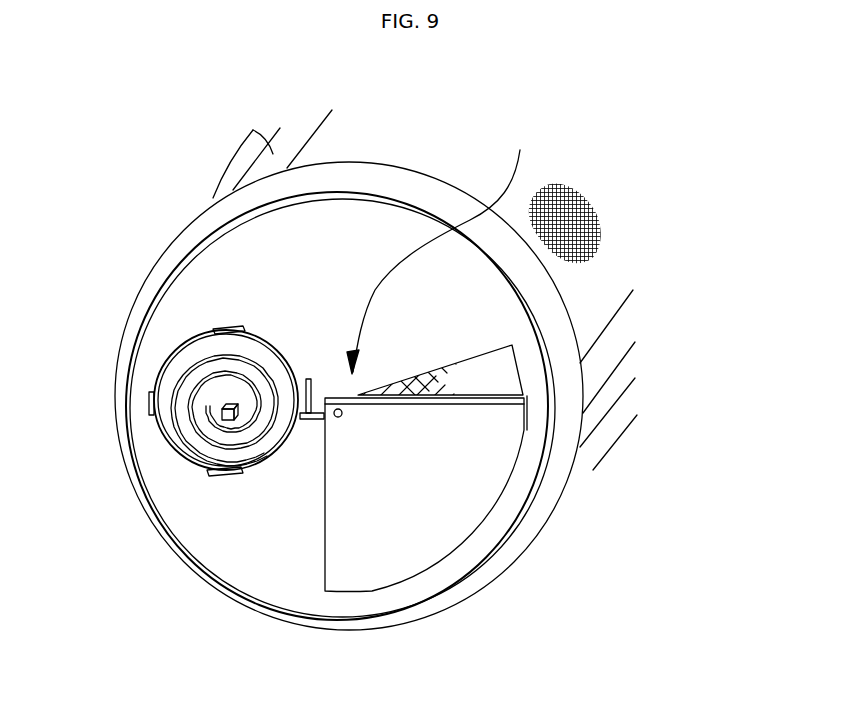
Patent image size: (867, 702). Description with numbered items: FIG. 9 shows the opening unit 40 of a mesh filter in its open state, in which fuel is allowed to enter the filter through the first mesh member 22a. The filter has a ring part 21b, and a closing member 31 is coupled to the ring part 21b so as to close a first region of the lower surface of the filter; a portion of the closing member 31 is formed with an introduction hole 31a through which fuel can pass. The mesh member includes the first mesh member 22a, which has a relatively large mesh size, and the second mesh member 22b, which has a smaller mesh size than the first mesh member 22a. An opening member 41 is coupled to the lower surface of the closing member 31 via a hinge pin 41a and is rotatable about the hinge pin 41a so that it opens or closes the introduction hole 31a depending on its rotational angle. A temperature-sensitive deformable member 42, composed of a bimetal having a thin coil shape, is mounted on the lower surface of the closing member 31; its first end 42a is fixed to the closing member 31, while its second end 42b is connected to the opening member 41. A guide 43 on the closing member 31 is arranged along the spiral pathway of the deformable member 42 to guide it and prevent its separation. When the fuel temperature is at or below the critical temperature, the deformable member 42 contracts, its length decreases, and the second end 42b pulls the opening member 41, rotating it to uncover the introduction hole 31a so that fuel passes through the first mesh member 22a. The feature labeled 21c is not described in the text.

The ring part 21b is at (170, 250).
The inlet pipe 21c is at (253, 130).
The first mesh member 22a is at (487, 390).
The second mesh member 22b is at (590, 237).
The closing member 31 is at (213, 540).
The introduction hole 31a is at (487, 350).
The opening unit 40 is at (440, 255).
The opening member 41 is at (435, 545).
The hinge pin 41a is at (337, 417).
The temperature-sensitive deformable member 42 is at (194, 366).
The first end 42a is at (220, 413).
The second end 42b is at (305, 418).
The guide 43 is at (220, 328).